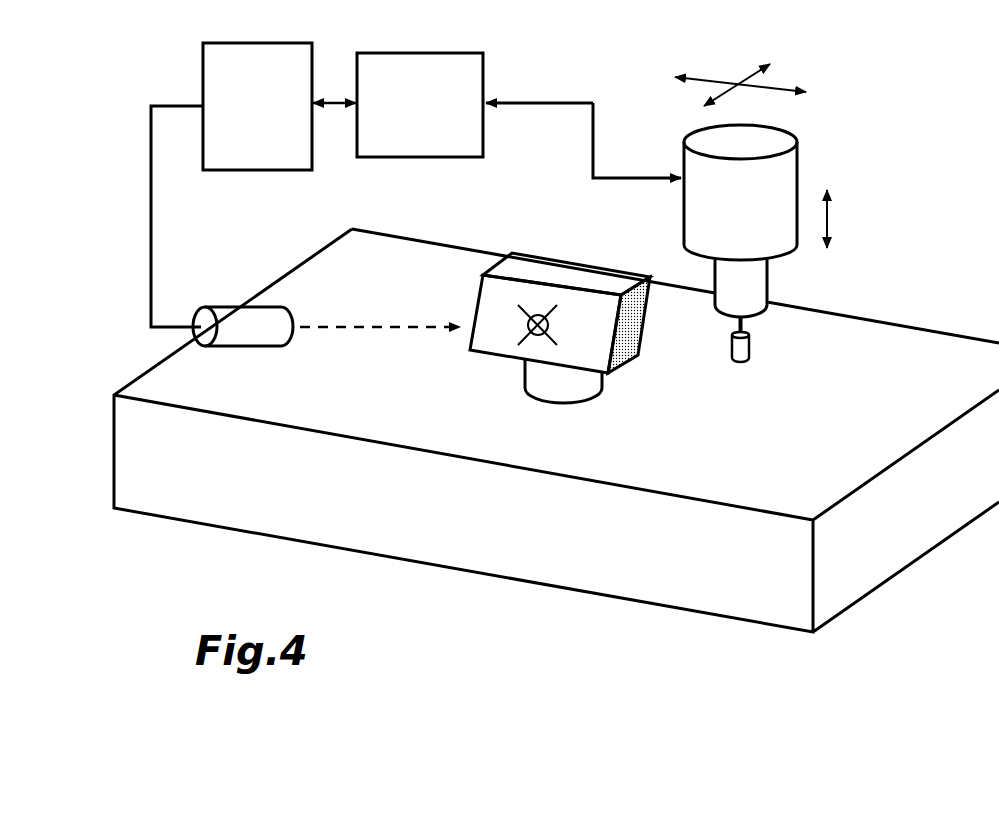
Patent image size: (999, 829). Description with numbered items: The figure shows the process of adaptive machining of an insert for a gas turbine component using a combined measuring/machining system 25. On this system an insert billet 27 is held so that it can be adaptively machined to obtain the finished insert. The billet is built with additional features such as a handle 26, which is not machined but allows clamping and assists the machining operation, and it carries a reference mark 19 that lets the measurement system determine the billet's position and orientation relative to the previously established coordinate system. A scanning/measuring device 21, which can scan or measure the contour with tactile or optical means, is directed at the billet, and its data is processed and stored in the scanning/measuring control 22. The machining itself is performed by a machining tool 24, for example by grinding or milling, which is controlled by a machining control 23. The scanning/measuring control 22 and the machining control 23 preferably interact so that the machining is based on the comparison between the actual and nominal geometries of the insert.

The reference mark 19 is at (534, 343).
The scanning/measuring device 21 is at (243, 322).
The scanning/measuring control 22 is at (238, 124).
The machining control 23 is at (401, 124).
The machining tool 24 is at (777, 185).
The combined measuring/machining system 25 is at (720, 583).
The handle 26 is at (558, 382).
The insert billet 27 is at (502, 333).